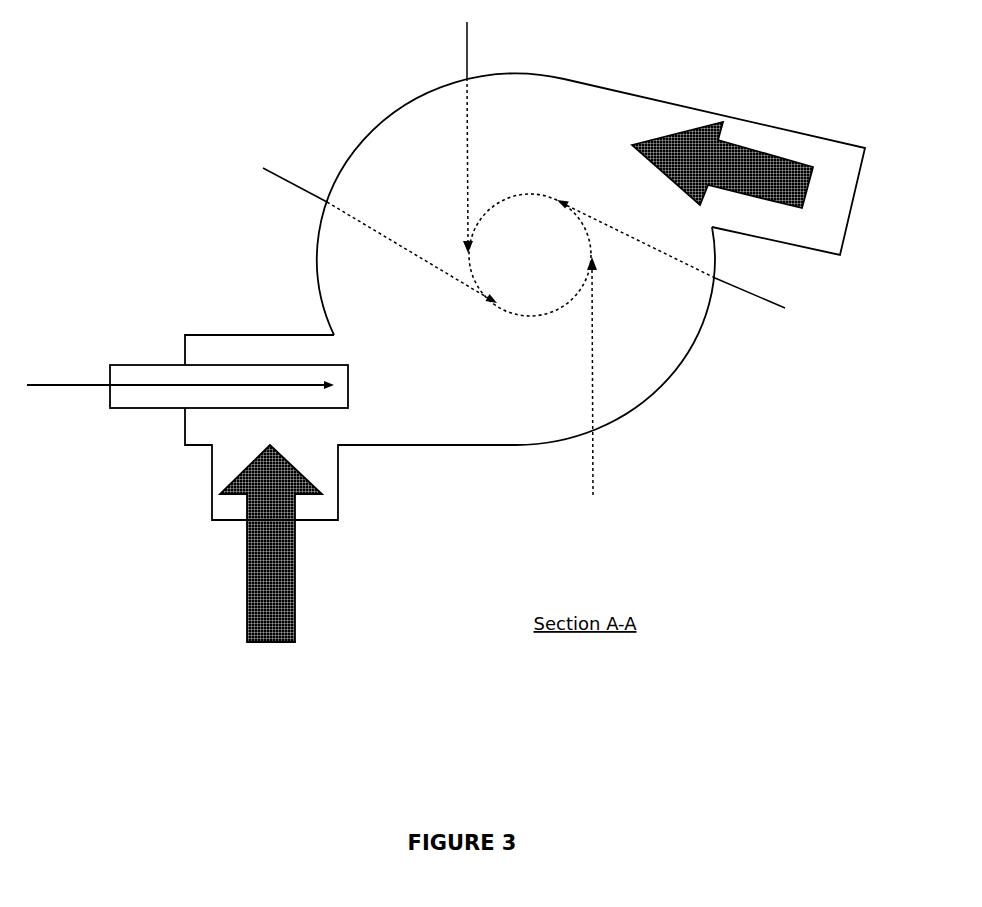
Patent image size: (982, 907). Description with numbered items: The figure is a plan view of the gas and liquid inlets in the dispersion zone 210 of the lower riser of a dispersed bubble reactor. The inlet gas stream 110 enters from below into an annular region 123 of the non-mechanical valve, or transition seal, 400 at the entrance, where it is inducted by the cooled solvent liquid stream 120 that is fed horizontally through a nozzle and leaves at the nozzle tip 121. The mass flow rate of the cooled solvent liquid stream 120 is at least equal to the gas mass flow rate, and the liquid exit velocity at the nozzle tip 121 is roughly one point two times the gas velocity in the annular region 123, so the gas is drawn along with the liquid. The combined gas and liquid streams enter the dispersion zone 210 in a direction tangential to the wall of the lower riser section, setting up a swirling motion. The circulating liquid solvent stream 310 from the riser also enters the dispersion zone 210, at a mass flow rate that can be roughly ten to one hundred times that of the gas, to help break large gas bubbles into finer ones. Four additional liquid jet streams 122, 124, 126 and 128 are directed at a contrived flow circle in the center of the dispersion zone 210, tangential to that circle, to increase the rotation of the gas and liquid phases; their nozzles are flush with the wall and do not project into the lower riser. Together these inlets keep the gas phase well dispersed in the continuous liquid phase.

The inlet gas stream 110 is at (278, 543).
The cooled solvent liquid stream 120 is at (180, 371).
The nozzle tip 121 is at (350, 403).
The liquid jet stream 122 is at (605, 381).
The annular region 123 is at (287, 352).
The liquid jet stream 124 is at (685, 259).
The liquid jet stream 126 is at (449, 130).
The liquid jet stream 128 is at (369, 228).
The dispersion zone 210 is at (373, 128).
The circulating liquid solvent stream 310 is at (722, 165).
The non-mechanical valve (transition seal) 400 is at (856, 145).